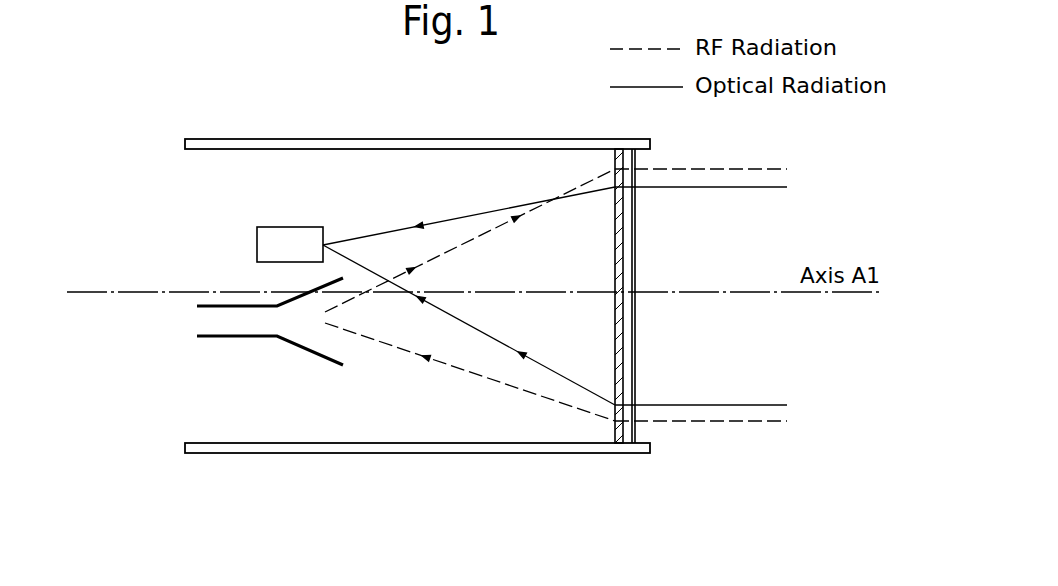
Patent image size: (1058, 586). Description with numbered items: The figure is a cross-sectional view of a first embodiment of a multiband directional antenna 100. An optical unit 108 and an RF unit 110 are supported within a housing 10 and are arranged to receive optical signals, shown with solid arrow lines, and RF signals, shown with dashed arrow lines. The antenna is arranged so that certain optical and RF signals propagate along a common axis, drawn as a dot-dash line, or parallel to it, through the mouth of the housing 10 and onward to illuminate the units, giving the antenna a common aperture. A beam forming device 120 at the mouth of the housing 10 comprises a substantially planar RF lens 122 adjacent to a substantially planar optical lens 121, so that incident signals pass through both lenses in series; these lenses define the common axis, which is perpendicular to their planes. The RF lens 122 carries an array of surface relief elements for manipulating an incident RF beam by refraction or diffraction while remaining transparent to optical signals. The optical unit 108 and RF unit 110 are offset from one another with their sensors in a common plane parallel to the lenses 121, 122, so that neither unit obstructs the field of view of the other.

The multiband directional antenna 100 is at (499, 348).
The housing 10 is at (335, 453).
The optical unit 108 is at (272, 245).
The RF unit 110 is at (235, 322).
The beam forming device 120 is at (688, 323).
The optical lens 121 is at (620, 362).
The RF lens 122 is at (628, 332).